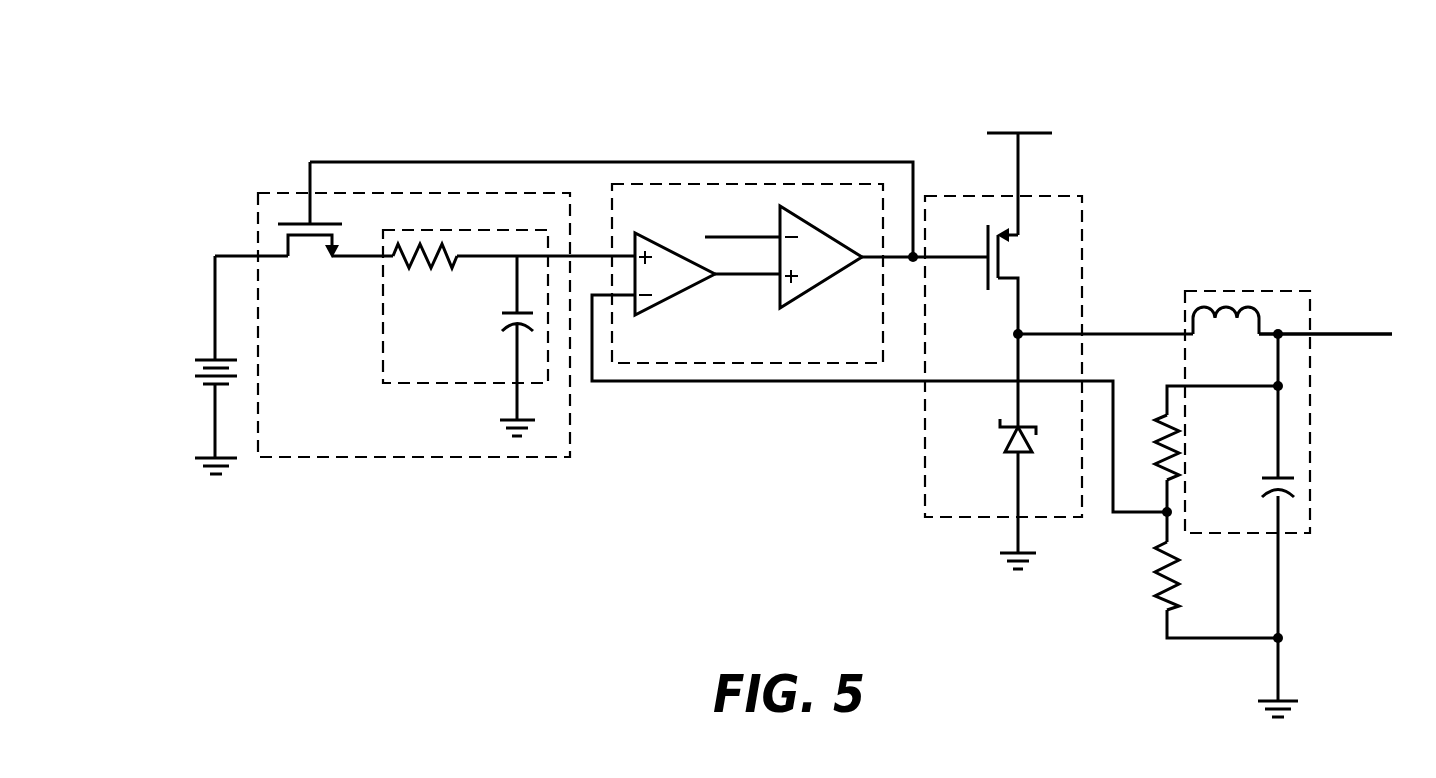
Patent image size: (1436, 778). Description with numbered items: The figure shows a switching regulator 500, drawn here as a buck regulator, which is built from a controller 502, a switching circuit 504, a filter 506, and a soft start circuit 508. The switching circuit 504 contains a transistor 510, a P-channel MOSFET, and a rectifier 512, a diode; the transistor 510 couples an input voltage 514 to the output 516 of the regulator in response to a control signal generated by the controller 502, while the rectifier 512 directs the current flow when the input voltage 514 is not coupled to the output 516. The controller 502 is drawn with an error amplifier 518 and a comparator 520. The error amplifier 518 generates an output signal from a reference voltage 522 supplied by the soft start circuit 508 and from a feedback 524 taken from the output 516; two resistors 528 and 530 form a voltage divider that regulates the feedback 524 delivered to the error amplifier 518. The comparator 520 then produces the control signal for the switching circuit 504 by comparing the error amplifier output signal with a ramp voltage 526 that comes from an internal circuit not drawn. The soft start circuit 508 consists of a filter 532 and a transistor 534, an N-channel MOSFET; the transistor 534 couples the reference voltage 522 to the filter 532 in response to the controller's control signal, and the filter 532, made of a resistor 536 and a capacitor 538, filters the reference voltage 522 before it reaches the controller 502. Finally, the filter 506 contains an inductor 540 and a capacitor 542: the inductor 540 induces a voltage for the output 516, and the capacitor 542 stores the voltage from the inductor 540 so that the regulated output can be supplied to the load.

The switching regulator 500 is at (745, 66).
The controller 502 is at (747, 273).
The switching circuit 504 is at (1003, 382).
The filter 506 is at (1256, 403).
The soft start circuit 508 is at (392, 309).
The transistor 510 is at (1008, 263).
The rectifier 512 is at (1000, 441).
The input voltage 514 is at (1040, 116).
The output 516 is at (1360, 297).
The error amplifier 518 is at (662, 304).
The comparator 520 is at (812, 218).
The reference voltage 522 is at (156, 326).
The feedback 524 is at (805, 405).
The ramp voltage 526 is at (711, 221).
The resistor 528 is at (1176, 454).
The resistor 530 is at (1148, 588).
The filter 532 is at (465, 333).
The transistor 534 is at (283, 246).
The resistor 536 is at (438, 268).
The capacitor 538 is at (500, 322).
The inductor 540 is at (1200, 310).
The capacitor 542 is at (1300, 484).